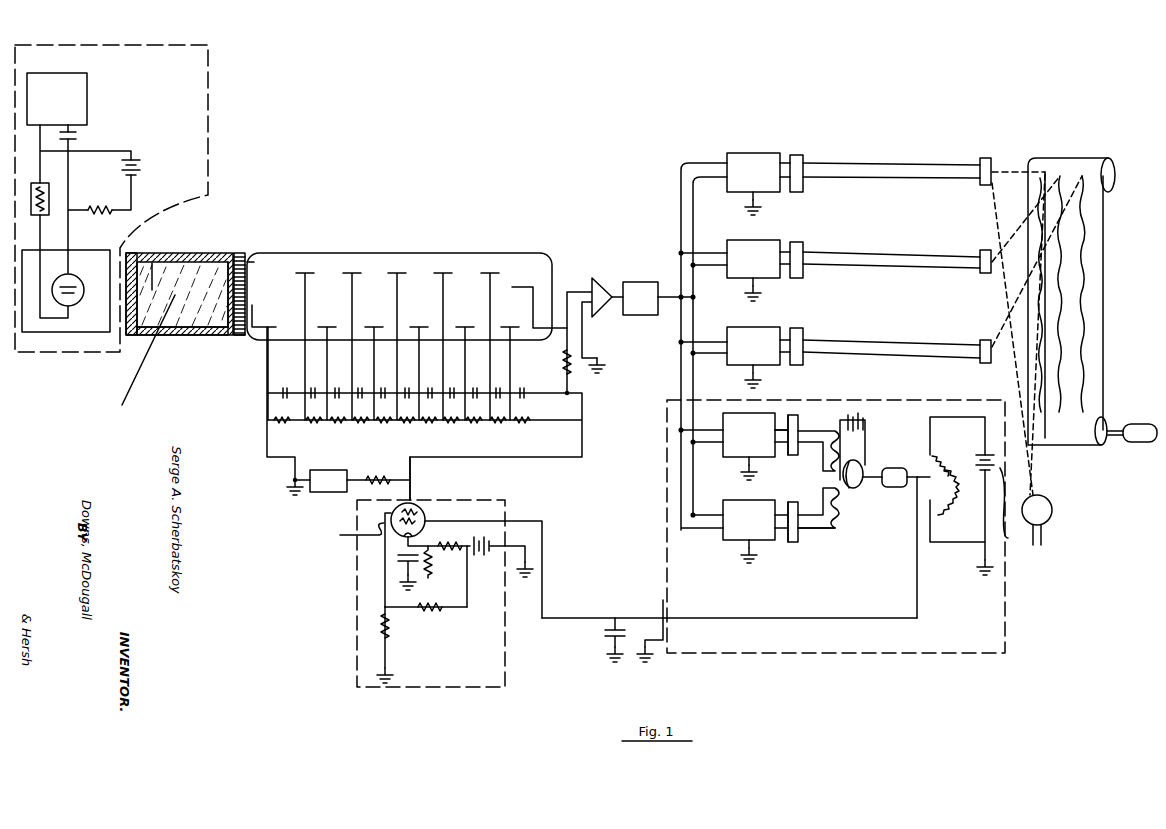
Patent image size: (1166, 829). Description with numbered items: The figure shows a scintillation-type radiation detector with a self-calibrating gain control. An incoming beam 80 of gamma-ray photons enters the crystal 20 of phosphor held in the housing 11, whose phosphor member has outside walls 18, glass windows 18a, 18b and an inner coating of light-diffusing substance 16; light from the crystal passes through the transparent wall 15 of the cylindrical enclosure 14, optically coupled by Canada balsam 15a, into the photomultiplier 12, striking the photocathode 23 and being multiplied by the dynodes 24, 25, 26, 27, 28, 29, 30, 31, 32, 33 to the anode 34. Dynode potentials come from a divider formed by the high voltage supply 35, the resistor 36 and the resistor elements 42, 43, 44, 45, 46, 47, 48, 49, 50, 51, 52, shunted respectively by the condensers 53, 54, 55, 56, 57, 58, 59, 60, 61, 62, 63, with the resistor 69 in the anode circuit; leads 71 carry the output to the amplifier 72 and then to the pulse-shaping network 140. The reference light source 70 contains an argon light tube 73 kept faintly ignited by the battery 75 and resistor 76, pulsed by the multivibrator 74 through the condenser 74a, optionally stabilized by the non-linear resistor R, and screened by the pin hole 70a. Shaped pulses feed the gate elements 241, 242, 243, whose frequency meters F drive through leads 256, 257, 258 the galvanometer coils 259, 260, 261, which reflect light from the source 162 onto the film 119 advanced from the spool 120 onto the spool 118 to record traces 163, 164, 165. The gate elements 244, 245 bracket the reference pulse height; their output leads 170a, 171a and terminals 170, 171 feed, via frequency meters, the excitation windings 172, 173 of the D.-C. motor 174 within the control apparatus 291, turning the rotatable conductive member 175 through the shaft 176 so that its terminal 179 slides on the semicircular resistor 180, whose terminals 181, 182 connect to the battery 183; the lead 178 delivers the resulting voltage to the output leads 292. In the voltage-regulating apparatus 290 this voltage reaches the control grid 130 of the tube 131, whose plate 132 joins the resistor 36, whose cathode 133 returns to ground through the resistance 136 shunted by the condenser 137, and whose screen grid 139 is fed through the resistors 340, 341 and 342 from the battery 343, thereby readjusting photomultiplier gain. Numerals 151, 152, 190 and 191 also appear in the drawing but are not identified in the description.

The source of reference light pulses 70 is at (24, 354).
The multivibrator oscillator 74 is at (57, 99).
The condenser 74a is at (79, 136).
The battery 75 is at (142, 172).
The resistor 76 is at (106, 214).
The non-linear resistor R is at (32, 191).
The argon light tube 73 is at (78, 298).
The diaphragm or pin hole 70a is at (112, 270).
The light-diffusing substance 16 is at (178, 338).
The crystal 20 is at (183, 294).
The outside walls 18 is at (136, 338).
The light-transparent glass window 18a is at (230, 262).
The light-transparent glass window 18b is at (152, 262).
The housing 11 is at (218, 337).
The transparent wall 15 is at (252, 266).
The optical coupling substance 15a is at (240, 340).
The beam of incoming particles 80 is at (140, 398).
The photomultiplier 12 is at (316, 272).
The cylindrical enclosure 14 is at (276, 258).
The photosensitive cathode 23 is at (264, 362).
The dynode 24 is at (305, 339).
The dynode 25 is at (327, 365).
The dynode 26 is at (352, 339).
The dynode 27 is at (374, 365).
The dynode 28 is at (397, 339).
The dynode 29 is at (419, 365).
The dynode 30 is at (443, 339).
The dynode 31 is at (465, 365).
The dynode 32 is at (490, 339).
The dynode 33 is at (510, 365).
The anode 34 is at (539, 299).
The resistor element 42 is at (282, 429).
The resistor element 43 is at (314, 429).
The resistor element 44 is at (338, 429).
The resistor element 45 is at (361, 429).
The resistor element 46 is at (384, 429).
The resistor element 47 is at (407, 429).
The resistor element 48 is at (429, 429).
The resistor element 49 is at (451, 429).
The resistor element 50 is at (474, 429).
The resistor element 51 is at (498, 429).
The resistor element 52 is at (522, 429).
The condenser 53 is at (285, 385).
The condenser 54 is at (313, 385).
The condenser 55 is at (337, 385).
The condenser 56 is at (360, 385).
The condenser 57 is at (383, 385).
The condenser 58 is at (407, 385).
The condenser 59 is at (430, 385).
The condenser 60 is at (452, 385).
The condenser 61 is at (475, 385).
The condenser 62 is at (498, 385).
The condenser 63 is at (522, 385).
The high voltage supply 35 is at (322, 494).
The ground connection 151 is at (282, 482).
The resistor 36 is at (386, 477).
The lead 152 is at (410, 480).
The voltage-regulating apparatus 290 is at (356, 616).
The plate 132 is at (417, 504).
The tube 131 is at (426, 519).
The screen grid 139 is at (393, 511).
The cathode 133 is at (347, 533).
The control grid 130 is at (418, 534).
The condenser 137 is at (398, 558).
The resistance 136 is at (428, 577).
The resistor 342 is at (467, 575).
The battery 343 is at (488, 564).
The resistor 341 is at (434, 612).
The resistor 340 is at (392, 630).
The output leads 292 is at (640, 646).
The resistor 69 is at (564, 361).
The leads 71 is at (572, 280).
The amplifier 72 is at (598, 312).
The pulse-shaping network 140 is at (630, 282).
The gate element 243 is at (727, 163).
The gate element 242 is at (727, 250).
The gate element 241 is at (727, 335).
The gate element 245 is at (723, 448).
The gate element 244 is at (723, 503).
The frequency meters F is at (798, 494).
The lead 258 is at (914, 166).
The lead 257 is at (910, 258).
The lead 256 is at (908, 347).
The galvanometer coil 261 is at (987, 158).
The galvanometer coil 260 is at (987, 250).
The galvanometer coil 259 is at (987, 340).
The sensitive film 119 is at (1103, 355).
The spool 120 is at (1115, 168).
The spool 118 is at (1106, 418).
The trace 163 is at (1085, 223).
The trace 164 is at (1064, 261).
The trace 165 is at (1043, 303).
The shaft 190 is at (1112, 444).
The chart drive motor 191 is at (1142, 444).
The light source 162 is at (1052, 518).
The control apparatus 291 is at (1004, 642).
The excitation winding 173 is at (831, 419).
The rotatable conductive member 175 is at (867, 415).
The D.-C. motor 174 is at (866, 460).
The shaft 176 is at (866, 480).
The excitation winding 172 is at (836, 520).
The terminals 170 is at (815, 530).
The output lead 170a is at (780, 540).
The terminals 171 is at (809, 412).
The output lead 171a is at (788, 419).
The terminal 181 is at (953, 397).
The terminal 179 is at (940, 463).
The fixed semicircular resistor 180 is at (945, 510).
The grounded terminal 182 is at (935, 545).
The lead 178 is at (906, 484).
The battery 183 is at (1012, 511).